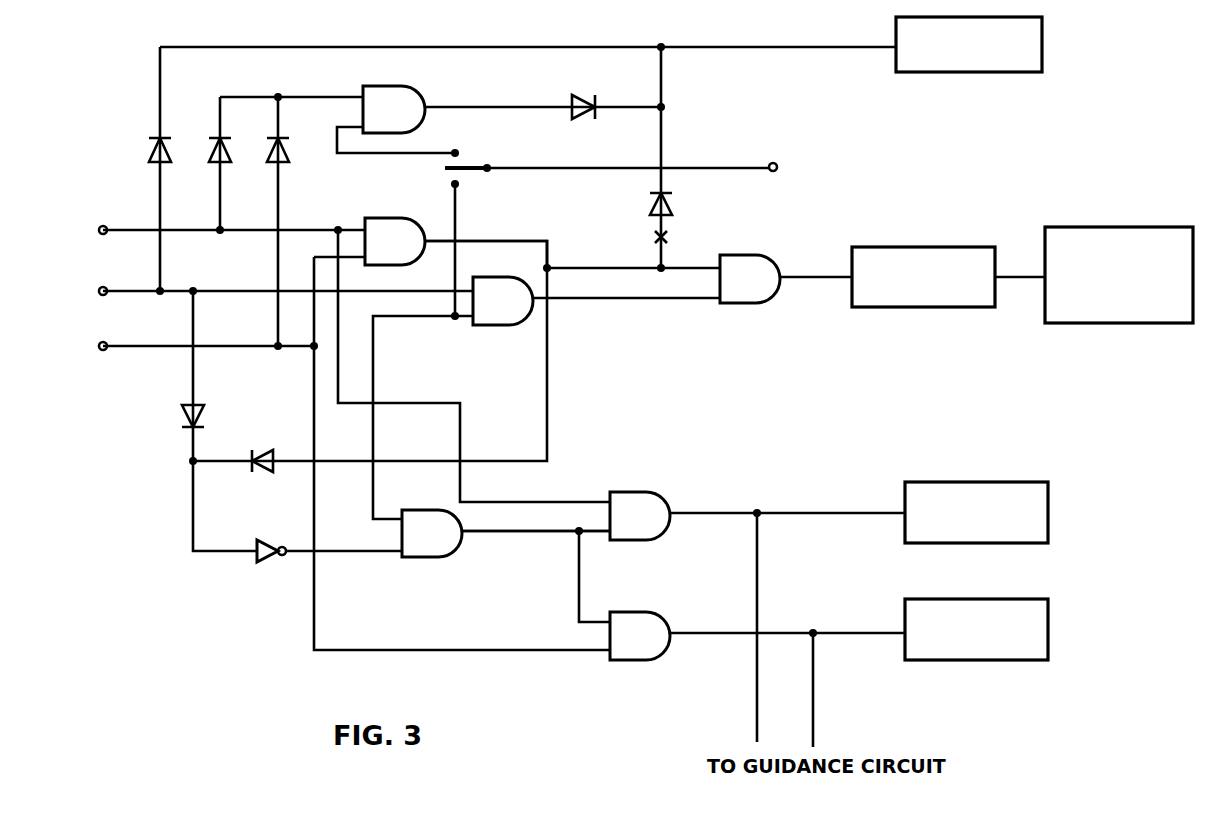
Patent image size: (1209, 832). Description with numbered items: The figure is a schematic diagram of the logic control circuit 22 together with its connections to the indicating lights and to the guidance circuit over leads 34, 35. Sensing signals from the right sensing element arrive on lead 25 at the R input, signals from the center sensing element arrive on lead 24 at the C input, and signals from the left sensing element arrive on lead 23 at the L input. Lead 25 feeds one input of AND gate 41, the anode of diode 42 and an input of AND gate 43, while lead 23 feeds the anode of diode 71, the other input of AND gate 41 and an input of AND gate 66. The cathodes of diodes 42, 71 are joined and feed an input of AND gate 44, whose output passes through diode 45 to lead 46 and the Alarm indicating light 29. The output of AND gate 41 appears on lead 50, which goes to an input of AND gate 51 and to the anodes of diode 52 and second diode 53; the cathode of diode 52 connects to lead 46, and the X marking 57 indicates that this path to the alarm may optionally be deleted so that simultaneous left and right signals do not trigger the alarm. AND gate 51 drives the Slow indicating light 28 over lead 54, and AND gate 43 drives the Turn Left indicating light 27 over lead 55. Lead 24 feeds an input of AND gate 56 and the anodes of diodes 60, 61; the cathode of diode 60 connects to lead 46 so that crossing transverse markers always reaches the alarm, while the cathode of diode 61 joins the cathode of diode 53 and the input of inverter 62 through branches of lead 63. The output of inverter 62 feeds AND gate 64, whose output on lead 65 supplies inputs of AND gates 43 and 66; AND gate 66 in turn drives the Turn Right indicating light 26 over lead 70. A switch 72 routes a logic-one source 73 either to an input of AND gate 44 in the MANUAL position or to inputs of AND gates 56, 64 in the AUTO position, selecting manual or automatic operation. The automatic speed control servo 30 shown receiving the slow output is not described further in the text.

The logic control circuit 22 is at (273, 630).
The lead 23 is at (128, 350).
The lead 24 is at (131, 295).
The lead 25 is at (131, 235).
The Turn Right indicating light 26 is at (948, 663).
The Turn Left indicating light 27 is at (950, 545).
The Slow indicating light 28 is at (946, 308).
The Alarm indicating light 29 is at (913, 74).
The automatic speed control servo 30 is at (1096, 324).
The lead 34 is at (757, 713).
The lead 35 is at (813, 722).
The AND gate 41 is at (386, 235).
The diode 42 is at (214, 150).
The AND gate 43 is at (655, 500).
The AND gate 44 is at (410, 101).
The diode 45 is at (578, 93).
The lead 46 is at (784, 48).
The lead 50 is at (540, 240).
The AND gate 51 is at (750, 257).
The diode 52 is at (676, 206).
The second diode 53 is at (268, 450).
The lead 54 is at (800, 270).
The lead 55 is at (800, 512).
The AND gate 56 is at (500, 325).
The X marking 57 is at (656, 237).
The diode 60 is at (150, 159).
The diode 61 is at (181, 418).
The inverter 62 is at (266, 560).
The lead 63 is at (192, 451).
The AND gate 64 is at (435, 558).
The lead 65 is at (528, 533).
The AND gate 66 is at (650, 614).
The lead 70 is at (833, 632).
The diode 71 is at (269, 153).
The switch 72 is at (478, 154).
The logic 1 source 73 is at (774, 162).